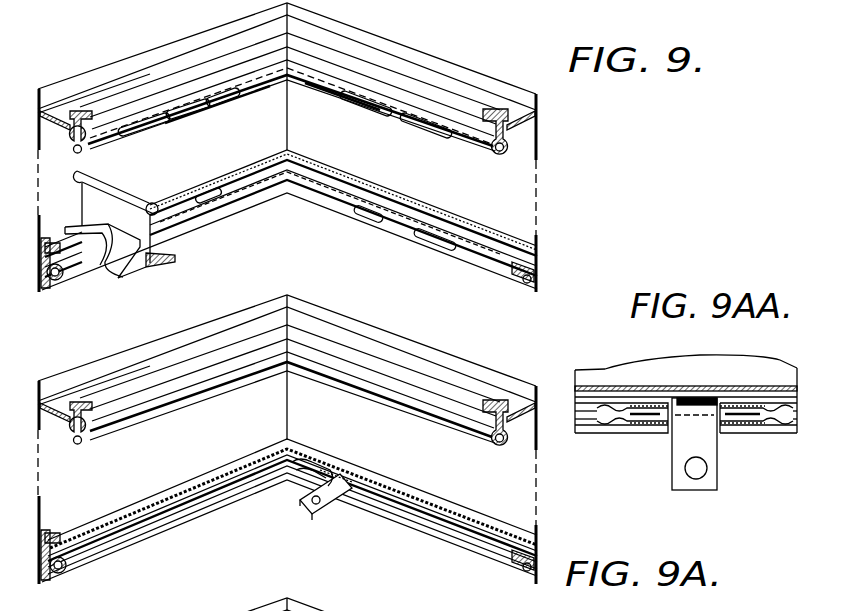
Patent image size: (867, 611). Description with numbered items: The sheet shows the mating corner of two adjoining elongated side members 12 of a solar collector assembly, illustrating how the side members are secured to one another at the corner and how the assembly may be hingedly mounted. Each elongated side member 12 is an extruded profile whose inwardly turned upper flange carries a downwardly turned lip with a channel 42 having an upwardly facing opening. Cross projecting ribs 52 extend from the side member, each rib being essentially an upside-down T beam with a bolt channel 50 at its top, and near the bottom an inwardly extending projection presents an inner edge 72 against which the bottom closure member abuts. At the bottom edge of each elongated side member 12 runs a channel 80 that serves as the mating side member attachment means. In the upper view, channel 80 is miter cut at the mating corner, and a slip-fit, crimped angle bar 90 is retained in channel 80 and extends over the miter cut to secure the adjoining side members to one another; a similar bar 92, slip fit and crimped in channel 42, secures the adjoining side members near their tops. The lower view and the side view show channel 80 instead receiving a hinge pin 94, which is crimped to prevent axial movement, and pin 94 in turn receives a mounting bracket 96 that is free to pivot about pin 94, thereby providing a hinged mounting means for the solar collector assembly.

In FIG. 9, the elongated side member 12 is at (205, 163).
In FIG. 9A, the elongated side member 12 is at (287, 453).
In FIG. 9, the channel 42 is at (510, 157).
In FIG. 9A, the channel 42 is at (289, 385).
In FIG. 9, the bolt channel 50 is at (92, 178).
In FIG. 9, the cross projecting rib 52 is at (97, 211).
In FIG. 9, the inner edge 72 is at (110, 272).
In FIG. 9, the channel 80 is at (540, 263).
In FIG. 9A, the channel 80 is at (540, 552).
In FIG. 9AA, the channel 80 is at (777, 405).
In FIG. 9, the crimped angle bar 90 is at (433, 212).
In FIG. 9AA, the crimped angle bar 90 is at (628, 390).
In FIG. 9, the bar 92 is at (323, 82).
In FIG. 9A, the hinge pin 94 is at (368, 493).
In FIG. 9AA, the hinge pin 94 is at (647, 413).
In FIG. 9A, the mounting bracket 96 is at (300, 508).
In FIG. 9AA, the mounting bracket 96 is at (720, 455).